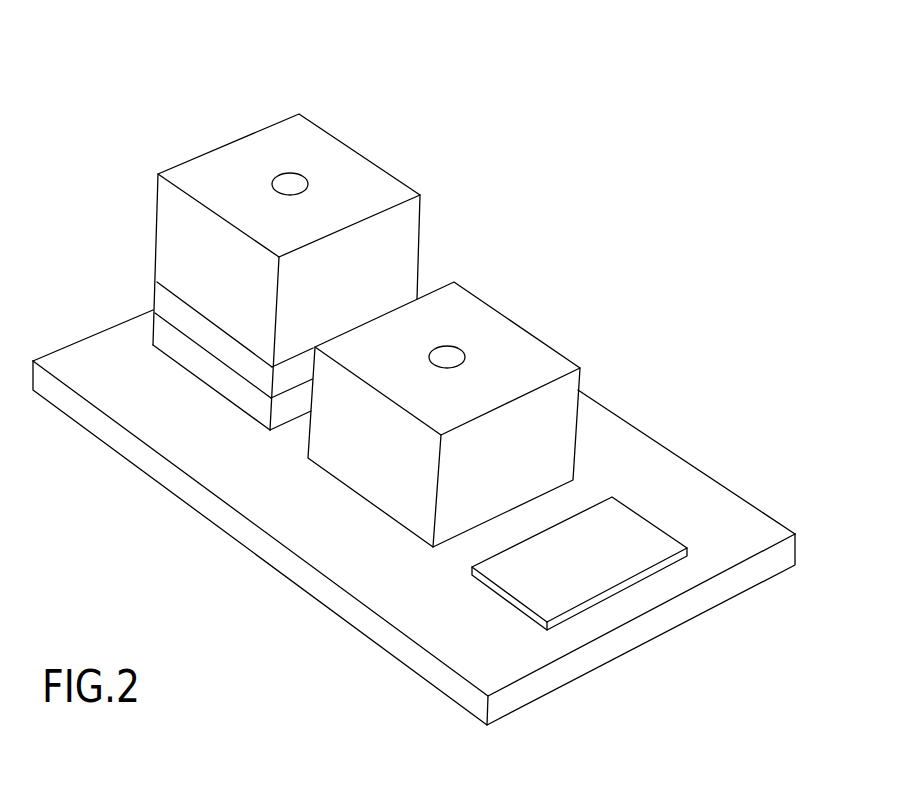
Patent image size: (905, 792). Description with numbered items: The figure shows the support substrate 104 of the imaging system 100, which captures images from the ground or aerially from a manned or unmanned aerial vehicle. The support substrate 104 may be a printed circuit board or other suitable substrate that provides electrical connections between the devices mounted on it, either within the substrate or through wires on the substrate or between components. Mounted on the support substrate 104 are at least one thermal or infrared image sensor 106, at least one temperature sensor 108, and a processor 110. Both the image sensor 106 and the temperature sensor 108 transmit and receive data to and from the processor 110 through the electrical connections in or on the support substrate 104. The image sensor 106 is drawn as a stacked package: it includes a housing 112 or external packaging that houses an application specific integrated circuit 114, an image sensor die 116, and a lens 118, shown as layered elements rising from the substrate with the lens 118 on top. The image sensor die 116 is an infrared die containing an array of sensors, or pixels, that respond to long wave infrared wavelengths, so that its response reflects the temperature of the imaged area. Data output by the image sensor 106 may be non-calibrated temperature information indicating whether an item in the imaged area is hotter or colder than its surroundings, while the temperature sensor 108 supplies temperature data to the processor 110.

The system 100 is at (612, 128).
The support substrate 104 is at (243, 543).
The image sensor 106 is at (225, 102).
The temperature sensor 108 is at (506, 332).
The processor 110 is at (635, 525).
The housing 112 is at (350, 147).
The application specific integrated circuit 114 is at (167, 342).
The image sensor die 116 is at (167, 302).
The lens 118 is at (167, 227).